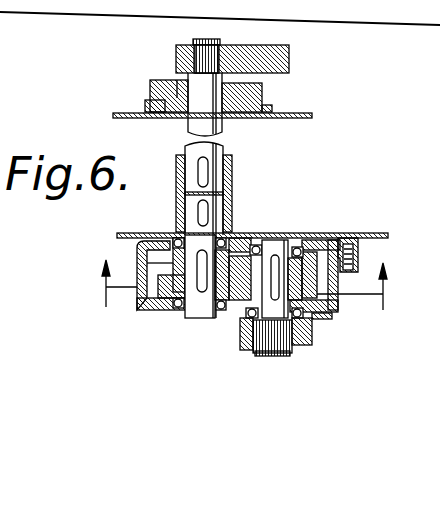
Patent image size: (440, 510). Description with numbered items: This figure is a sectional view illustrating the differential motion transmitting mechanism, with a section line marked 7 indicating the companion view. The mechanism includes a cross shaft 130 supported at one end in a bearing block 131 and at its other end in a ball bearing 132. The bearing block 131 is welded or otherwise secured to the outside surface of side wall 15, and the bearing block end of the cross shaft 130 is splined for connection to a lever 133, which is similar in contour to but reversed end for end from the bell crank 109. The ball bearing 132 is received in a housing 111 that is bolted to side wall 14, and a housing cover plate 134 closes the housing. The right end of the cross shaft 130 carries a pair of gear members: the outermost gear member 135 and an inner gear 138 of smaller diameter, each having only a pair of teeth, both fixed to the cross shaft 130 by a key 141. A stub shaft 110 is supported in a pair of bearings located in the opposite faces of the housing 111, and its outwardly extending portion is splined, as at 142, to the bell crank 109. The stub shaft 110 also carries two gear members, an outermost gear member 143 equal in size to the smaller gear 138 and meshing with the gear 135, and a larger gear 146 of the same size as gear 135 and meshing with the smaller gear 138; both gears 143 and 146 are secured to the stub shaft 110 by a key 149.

The lever 133 is at (290, 56).
The bearing block 131 is at (263, 95).
The side wall 15 is at (130, 113).
The cross shaft 130 is at (233, 163).
The ball bearing 132 is at (176, 232).
The side wall 14 is at (365, 236).
The inner gear 138 is at (137, 248).
The housing cover plate 134 is at (137, 302).
The housing 111 is at (137, 267).
The outermost gear member 135 is at (166, 290).
The key 141 is at (205, 294).
The stub shaft 110 is at (276, 250).
The outermost gear member 143 is at (343, 296).
The larger gear 146 is at (358, 256).
The key 149 is at (299, 239).
The bell crank 109 is at (300, 348).
The splined portion 142 is at (300, 329).
The section line 7 is at (239, 304).